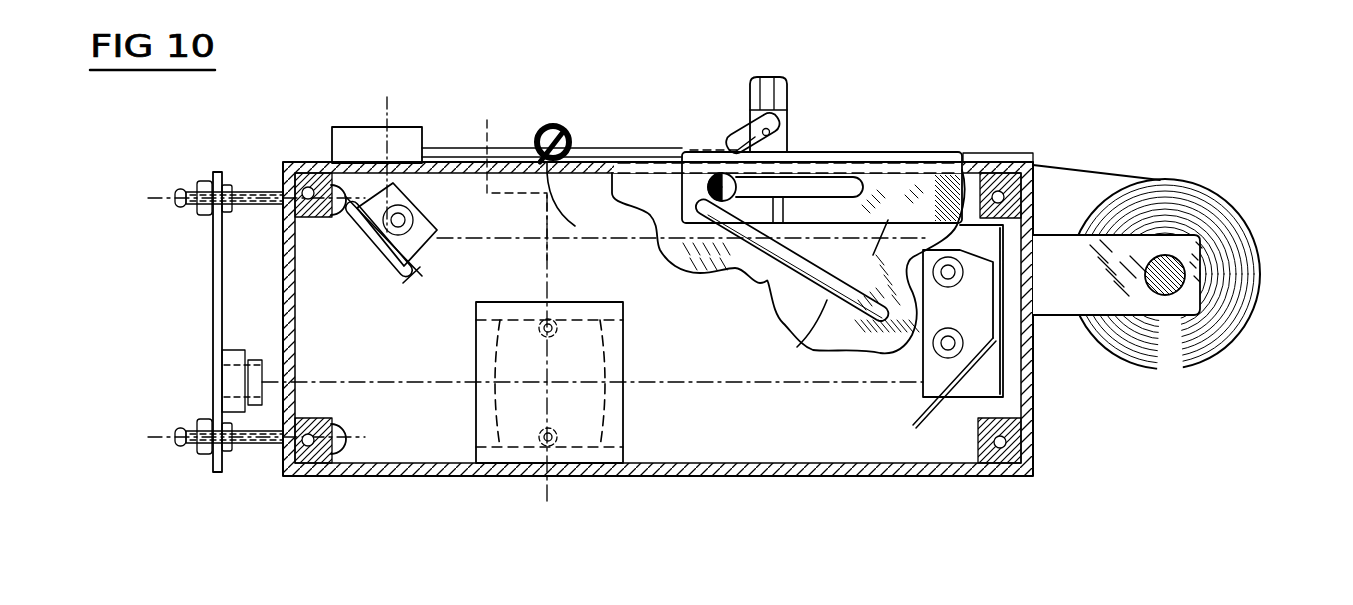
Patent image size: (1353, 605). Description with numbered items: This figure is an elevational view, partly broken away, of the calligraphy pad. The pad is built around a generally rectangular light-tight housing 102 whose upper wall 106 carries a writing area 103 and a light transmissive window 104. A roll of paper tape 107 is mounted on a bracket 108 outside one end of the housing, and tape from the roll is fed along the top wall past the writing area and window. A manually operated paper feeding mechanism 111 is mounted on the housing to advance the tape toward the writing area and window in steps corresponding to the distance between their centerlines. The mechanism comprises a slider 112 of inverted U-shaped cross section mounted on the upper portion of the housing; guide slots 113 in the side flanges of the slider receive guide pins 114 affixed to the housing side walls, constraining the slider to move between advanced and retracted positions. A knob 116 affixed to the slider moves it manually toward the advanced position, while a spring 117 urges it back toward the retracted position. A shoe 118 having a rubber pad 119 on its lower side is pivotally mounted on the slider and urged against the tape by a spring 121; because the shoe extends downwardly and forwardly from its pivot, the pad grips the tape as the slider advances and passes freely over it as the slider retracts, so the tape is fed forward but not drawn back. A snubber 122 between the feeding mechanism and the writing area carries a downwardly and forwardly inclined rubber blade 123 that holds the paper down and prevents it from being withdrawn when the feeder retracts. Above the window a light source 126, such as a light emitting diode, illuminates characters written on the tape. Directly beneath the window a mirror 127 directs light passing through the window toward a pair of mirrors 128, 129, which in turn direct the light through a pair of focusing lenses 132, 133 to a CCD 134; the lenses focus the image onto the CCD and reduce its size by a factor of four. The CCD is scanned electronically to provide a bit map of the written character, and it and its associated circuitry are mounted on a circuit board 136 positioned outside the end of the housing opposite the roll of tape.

The light-tight housing 102 is at (767, 283).
The writing area 103 is at (467, 148).
The light transmissive window 104 is at (410, 180).
The upper wall 106 is at (305, 160).
The roll of paper tape 107 is at (1235, 294).
The bracket 108 is at (1088, 258).
The paper feeding mechanism 111 is at (880, 182).
The slider 112 is at (897, 217).
The guide slots 113 is at (808, 185).
The guide pins 114 is at (706, 188).
The knob 116 is at (775, 83).
The spring 117 is at (797, 347).
The shoe 118 is at (732, 140).
The rubber pad 119 is at (793, 211).
The spring 121 is at (742, 130).
The snubber 122 is at (560, 130).
The rubber blade 123 is at (587, 204).
The light source 126 is at (392, 127).
The mirror 127 is at (410, 282).
The mirror 128 is at (988, 278).
The mirror 129 is at (915, 425).
The focusing lens 132 is at (612, 405).
The focusing lens 133 is at (487, 380).
The CCD 134 is at (253, 392).
The circuit board 136 is at (213, 293).